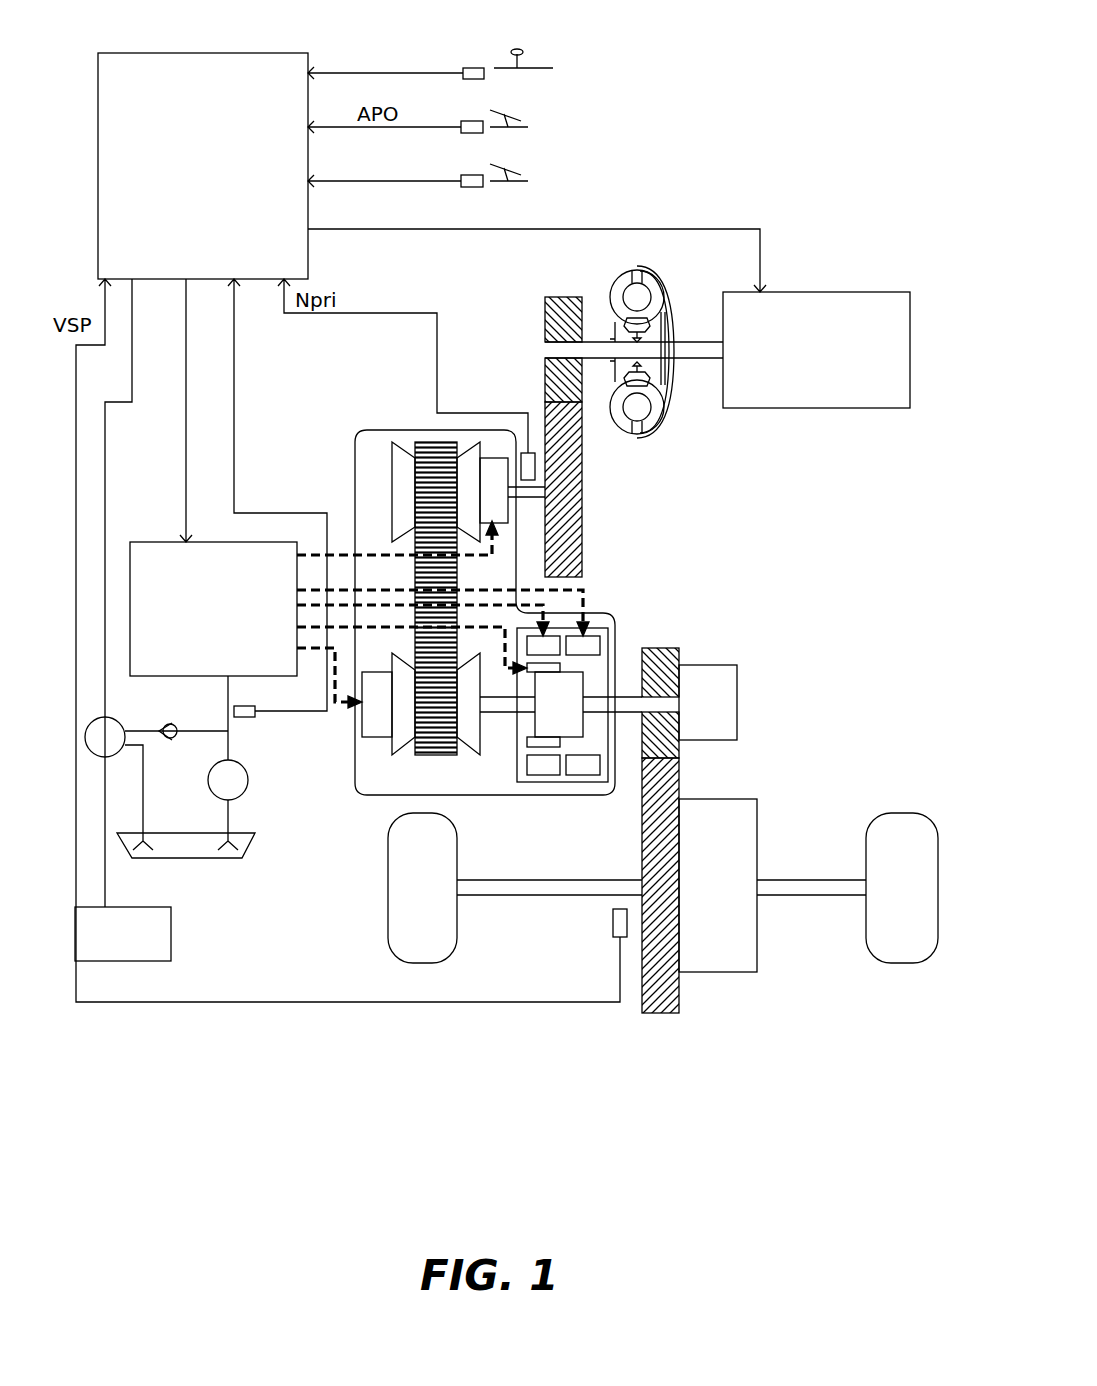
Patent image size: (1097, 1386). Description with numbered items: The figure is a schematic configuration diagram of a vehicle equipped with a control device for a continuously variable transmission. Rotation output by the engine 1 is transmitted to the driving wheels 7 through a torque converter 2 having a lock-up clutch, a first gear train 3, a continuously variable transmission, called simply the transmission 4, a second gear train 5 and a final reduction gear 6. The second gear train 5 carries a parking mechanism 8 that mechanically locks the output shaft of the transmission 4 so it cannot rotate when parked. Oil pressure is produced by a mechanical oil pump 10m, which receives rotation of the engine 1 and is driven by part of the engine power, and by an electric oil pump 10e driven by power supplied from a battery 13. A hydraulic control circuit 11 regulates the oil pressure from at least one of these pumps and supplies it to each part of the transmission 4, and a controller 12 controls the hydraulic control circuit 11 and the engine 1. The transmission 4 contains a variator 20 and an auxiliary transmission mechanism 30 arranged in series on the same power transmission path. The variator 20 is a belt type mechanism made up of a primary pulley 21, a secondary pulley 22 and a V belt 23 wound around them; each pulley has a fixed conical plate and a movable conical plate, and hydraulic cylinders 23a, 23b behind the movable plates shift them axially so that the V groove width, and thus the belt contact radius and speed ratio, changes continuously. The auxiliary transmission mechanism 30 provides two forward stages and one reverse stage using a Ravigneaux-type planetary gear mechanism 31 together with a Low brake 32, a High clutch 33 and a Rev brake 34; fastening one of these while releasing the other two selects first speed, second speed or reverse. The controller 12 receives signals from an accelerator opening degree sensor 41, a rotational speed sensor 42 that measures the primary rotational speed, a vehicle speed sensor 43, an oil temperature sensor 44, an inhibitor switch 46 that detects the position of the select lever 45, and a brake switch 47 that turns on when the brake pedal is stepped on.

The engine 1 is at (895, 302).
The torque converter 2 is at (672, 297).
The first gear train 3 is at (573, 283).
The transmission 4 is at (405, 431).
The second gear train 5 is at (668, 1028).
The final reduction gear 6 is at (715, 962).
The driving wheels 7 is at (425, 950).
The parking mechanism 8 is at (720, 695).
The electric oil pump 10e is at (115, 722).
The mechanical oil pump 10m is at (207, 790).
The hydraulic control circuit 11 is at (142, 545).
The controller 12 is at (290, 55).
The battery 13 is at (172, 915).
The variator 20 is at (380, 447).
The primary pulley 21 is at (405, 490).
The secondary pulley 22 is at (405, 720).
The V belt 23 is at (440, 458).
The hydraulic cylinder 23a is at (492, 470).
The hydraulic cylinder 23b is at (372, 712).
The auxiliary transmission mechanism 30 is at (612, 628).
The Ravigneaux-type planetary gear mechanism 31 is at (560, 700).
The Low brake 32 is at (548, 645).
The High clutch 33 is at (545, 745).
The Rev brake 34 is at (582, 648).
The accelerator opening degree sensor 41 is at (481, 133).
The rotational speed sensor 42 is at (528, 465).
The vehicle speed sensor 43 is at (617, 922).
The oil temperature sensor 44 is at (250, 717).
The shift lever 45 is at (525, 62).
The inhibitor switch 46 is at (473, 68).
The brake switch 47 is at (481, 187).